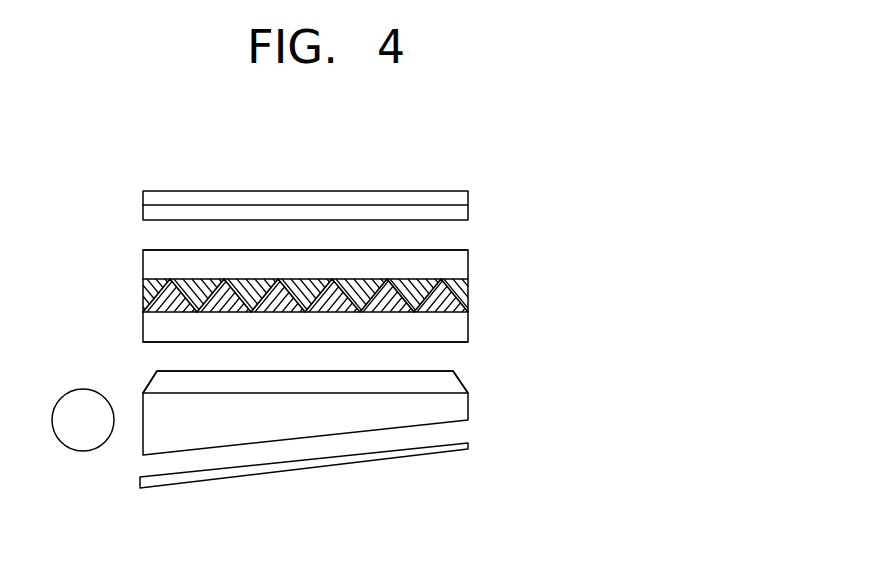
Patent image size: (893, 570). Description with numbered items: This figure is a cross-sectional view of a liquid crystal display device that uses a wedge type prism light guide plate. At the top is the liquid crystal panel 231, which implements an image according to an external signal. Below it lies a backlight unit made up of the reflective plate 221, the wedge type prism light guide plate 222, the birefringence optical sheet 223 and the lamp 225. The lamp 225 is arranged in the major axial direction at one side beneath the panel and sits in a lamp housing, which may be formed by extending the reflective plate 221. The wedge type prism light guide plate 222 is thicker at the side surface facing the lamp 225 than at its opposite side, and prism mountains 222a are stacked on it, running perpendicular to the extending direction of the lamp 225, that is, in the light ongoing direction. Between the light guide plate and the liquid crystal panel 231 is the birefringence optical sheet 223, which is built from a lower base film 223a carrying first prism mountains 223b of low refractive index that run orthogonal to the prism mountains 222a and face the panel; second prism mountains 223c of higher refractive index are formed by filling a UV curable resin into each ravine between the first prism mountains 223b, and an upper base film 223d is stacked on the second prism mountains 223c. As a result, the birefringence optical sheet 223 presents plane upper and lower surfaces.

The reflective plate 221 is at (453, 448).
The wedge type prism light guide plate 222 is at (365, 407).
The prism mountains 222a is at (447, 377).
The birefringence optical sheet 223 is at (380, 288).
The base film 223a is at (366, 329).
The first prism mountains 223b is at (458, 301).
The second prism mountains 223c is at (460, 284).
The base film 223d is at (448, 260).
The lamp 225 is at (73, 431).
The liquid crystal panel 231 is at (455, 213).